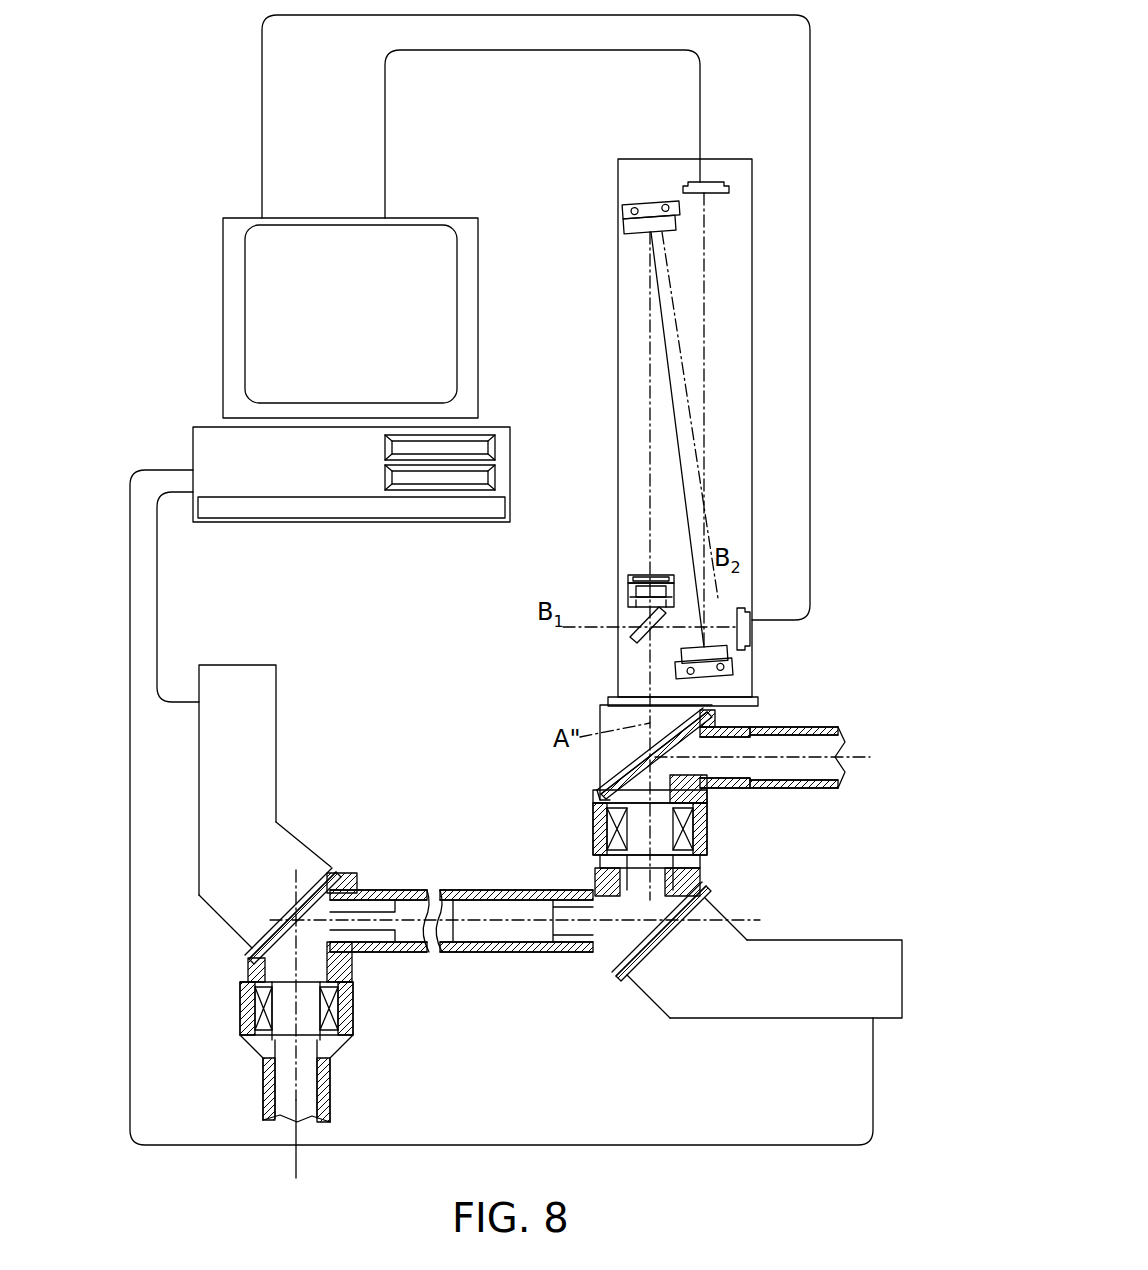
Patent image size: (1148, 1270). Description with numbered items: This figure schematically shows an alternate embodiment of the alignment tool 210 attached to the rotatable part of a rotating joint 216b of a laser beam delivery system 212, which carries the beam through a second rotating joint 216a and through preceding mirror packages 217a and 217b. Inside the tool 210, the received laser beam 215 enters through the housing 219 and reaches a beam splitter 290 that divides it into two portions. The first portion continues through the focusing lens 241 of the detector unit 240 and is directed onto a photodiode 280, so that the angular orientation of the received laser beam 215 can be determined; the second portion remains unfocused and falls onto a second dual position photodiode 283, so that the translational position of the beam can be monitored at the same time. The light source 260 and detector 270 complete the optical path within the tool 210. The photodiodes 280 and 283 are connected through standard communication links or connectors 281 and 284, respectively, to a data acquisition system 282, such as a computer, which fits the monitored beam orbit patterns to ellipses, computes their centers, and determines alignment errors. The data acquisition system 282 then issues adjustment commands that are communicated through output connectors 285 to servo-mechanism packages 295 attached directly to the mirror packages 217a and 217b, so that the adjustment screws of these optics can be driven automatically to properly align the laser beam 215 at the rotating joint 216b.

The alignment tool 210 is at (612, 413).
The laser beam delivery system 212 is at (497, 968).
The received laser beam 215 is at (295, 1168).
The rotating joint 216a is at (353, 976).
The rotating joint 216b is at (708, 826).
The mirror package 217a is at (236, 934).
The mirror package 217b is at (710, 928).
The mirror housing 219 is at (602, 713).
The detector unit 240 is at (618, 588).
The focusing lens 241 is at (648, 576).
The light source 260 is at (632, 222).
The detector 270 is at (708, 656).
The photodiode 280 is at (716, 182).
The communication link or connector 281 is at (700, 83).
The data acquisition system 282 is at (450, 208).
The second dual position photodiode 283 is at (748, 630).
The communication link or connector 284 is at (810, 450).
The output connector 285 is at (157, 568).
The beam splitter 290 is at (636, 638).
The servo-mechanism package 295 is at (778, 1006).